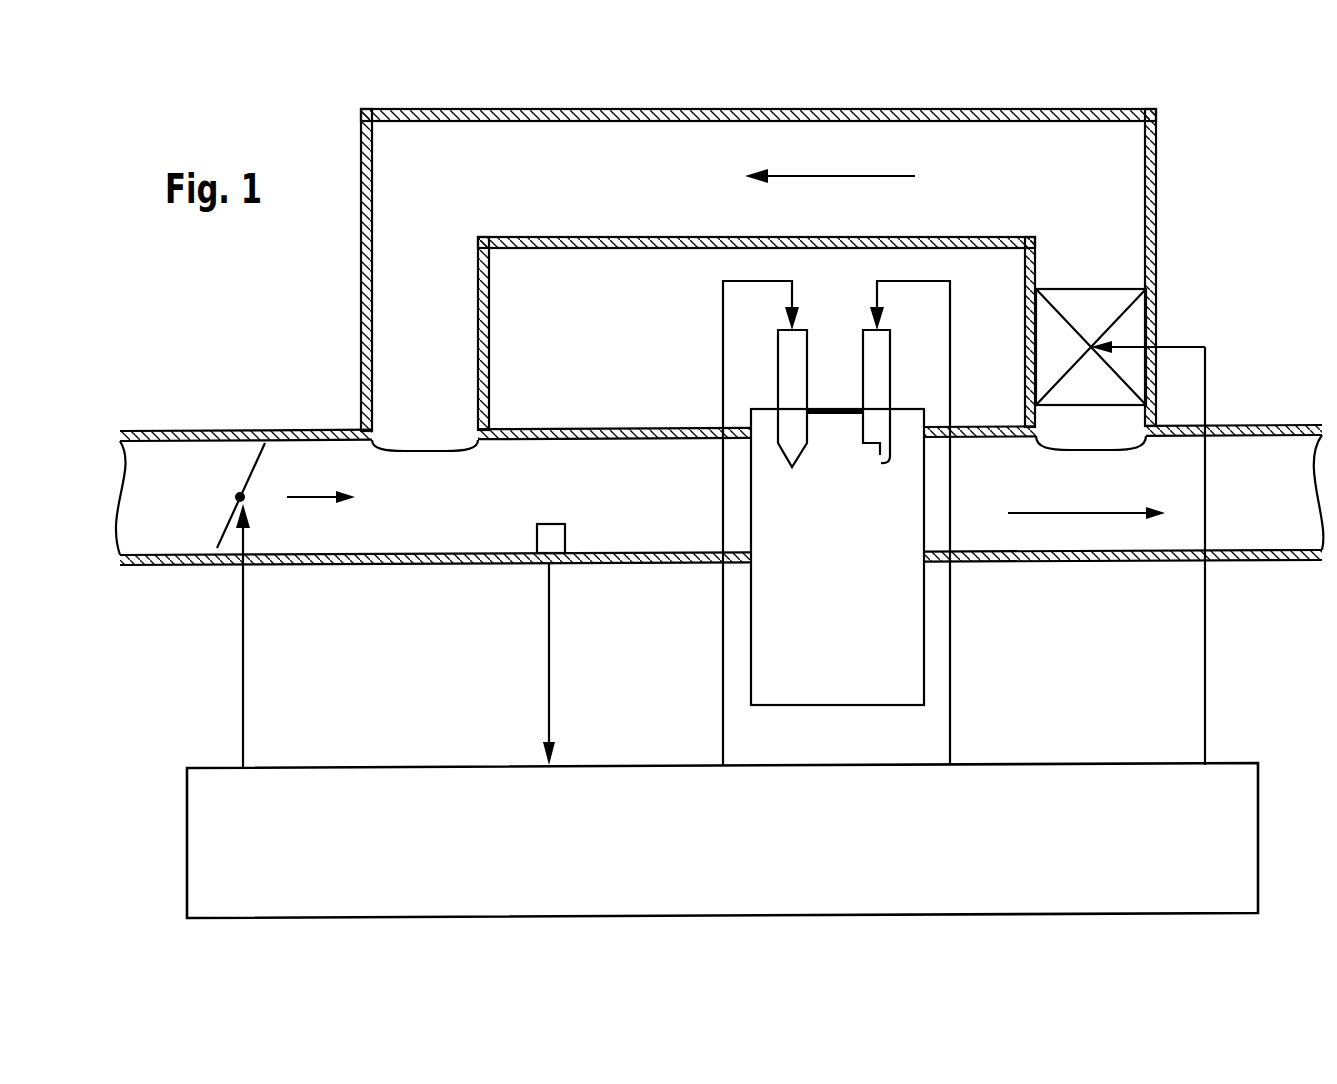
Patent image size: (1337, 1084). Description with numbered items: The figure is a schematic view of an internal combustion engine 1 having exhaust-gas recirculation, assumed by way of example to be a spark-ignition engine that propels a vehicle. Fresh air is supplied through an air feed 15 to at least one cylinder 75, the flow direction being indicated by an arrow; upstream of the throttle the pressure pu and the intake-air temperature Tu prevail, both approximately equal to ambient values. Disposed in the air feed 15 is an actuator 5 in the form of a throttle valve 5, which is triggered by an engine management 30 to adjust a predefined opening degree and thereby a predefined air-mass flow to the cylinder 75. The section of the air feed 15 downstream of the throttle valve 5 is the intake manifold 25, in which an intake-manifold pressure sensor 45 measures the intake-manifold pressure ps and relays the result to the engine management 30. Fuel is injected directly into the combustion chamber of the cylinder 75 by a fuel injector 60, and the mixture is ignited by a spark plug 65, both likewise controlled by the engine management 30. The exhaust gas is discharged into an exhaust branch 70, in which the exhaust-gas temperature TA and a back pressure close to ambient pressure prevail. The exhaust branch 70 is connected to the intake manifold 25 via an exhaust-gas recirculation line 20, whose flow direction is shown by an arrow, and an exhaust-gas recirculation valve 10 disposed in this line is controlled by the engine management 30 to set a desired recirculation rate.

The internal combustion engine 1 is at (1117, 72).
The actuator 5 is at (250, 440).
The exhaust-gas recirculation valve 10 is at (1118, 292).
The air feed 15 is at (170, 448).
The exhaust-gas recirculation line 20 is at (680, 133).
The intake manifold 25 is at (328, 447).
The engine management 30 is at (626, 765).
The intake-manifold pressure sensor 45 is at (558, 550).
The fuel injector 60 is at (785, 365).
The spark plug 65 is at (880, 348).
The exhaust branch 70 is at (1228, 450).
The cylinder 75 is at (846, 690).